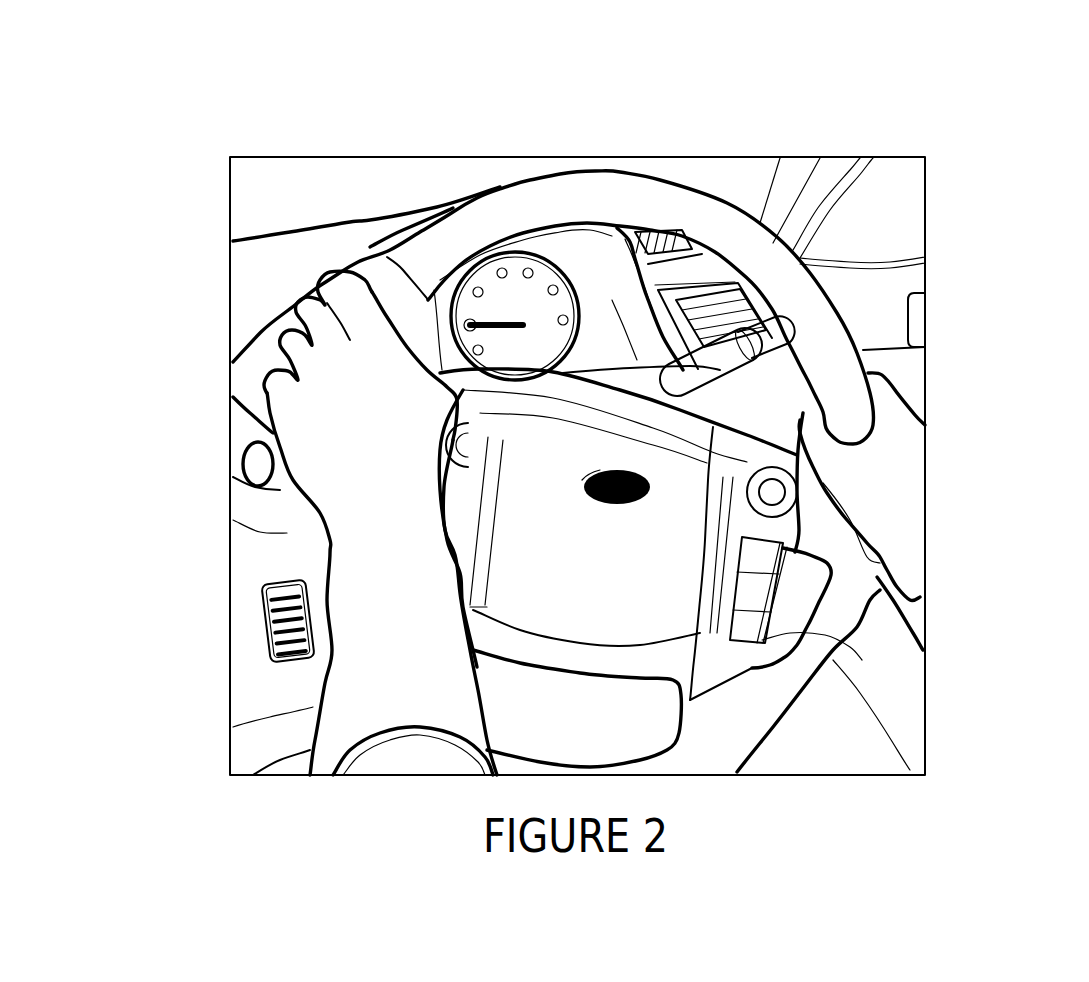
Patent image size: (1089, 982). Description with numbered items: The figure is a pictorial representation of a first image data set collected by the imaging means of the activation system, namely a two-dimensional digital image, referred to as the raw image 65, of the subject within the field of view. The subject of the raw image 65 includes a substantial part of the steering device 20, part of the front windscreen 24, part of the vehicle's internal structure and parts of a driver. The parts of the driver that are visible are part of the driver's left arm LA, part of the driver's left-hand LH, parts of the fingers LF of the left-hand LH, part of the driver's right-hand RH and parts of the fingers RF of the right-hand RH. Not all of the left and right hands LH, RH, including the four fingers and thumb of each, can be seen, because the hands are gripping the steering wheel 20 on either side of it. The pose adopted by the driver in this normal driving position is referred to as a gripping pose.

The raw image 65 is at (220, 293).
The steering device 20 is at (542, 190).
The front windscreen 24 is at (713, 190).
The fingers of the driver's left-hand LF is at (312, 313).
The driver's left-hand LH is at (389, 450).
The driver's left arm LA is at (463, 683).
The driver's right-hand RH is at (912, 505).
The fingers of the driver's right-hand RF is at (884, 394).